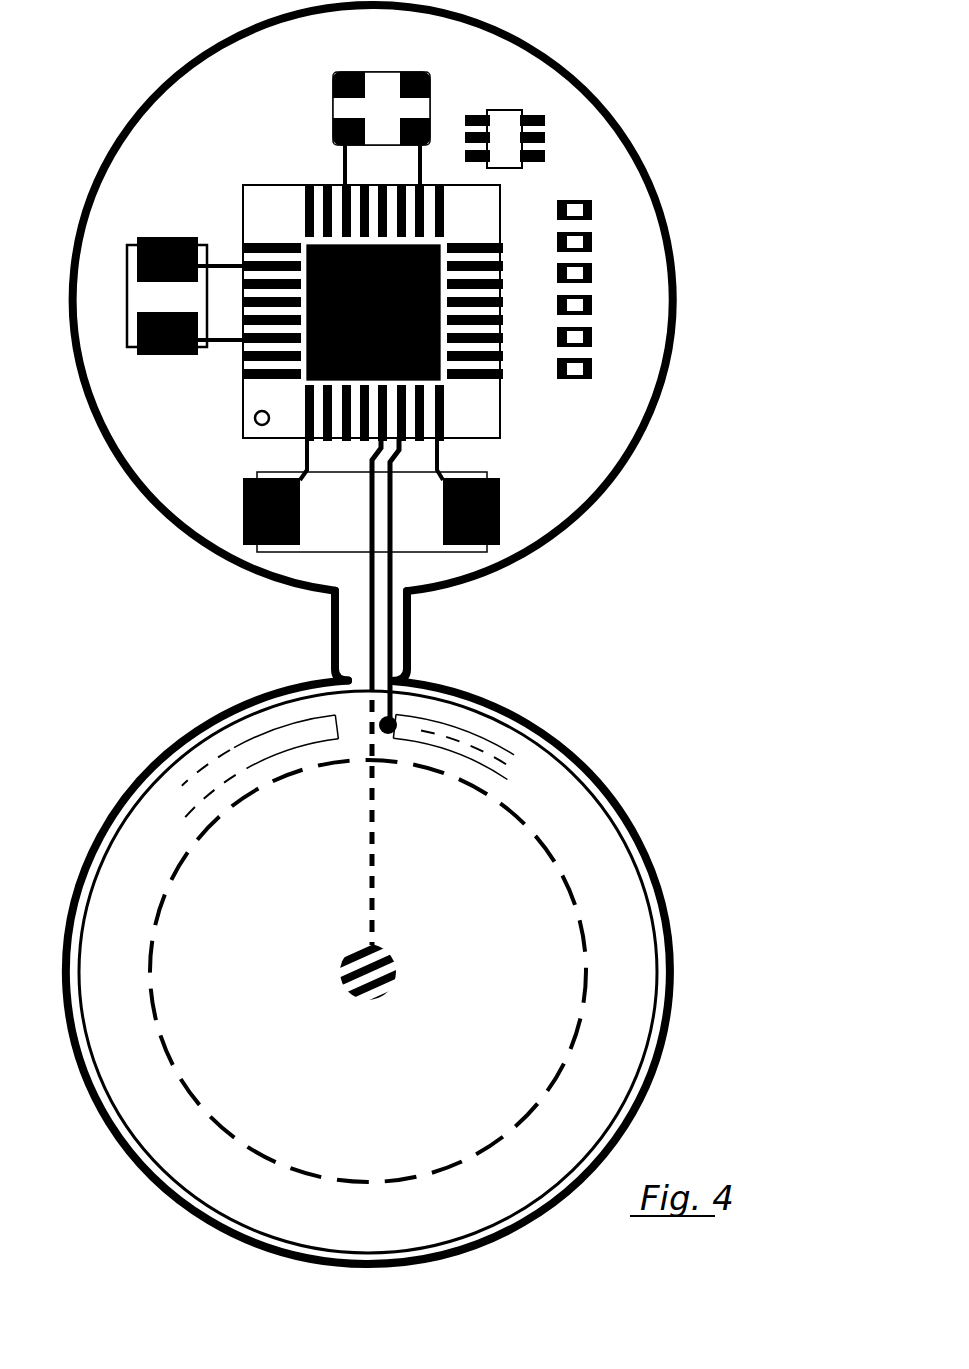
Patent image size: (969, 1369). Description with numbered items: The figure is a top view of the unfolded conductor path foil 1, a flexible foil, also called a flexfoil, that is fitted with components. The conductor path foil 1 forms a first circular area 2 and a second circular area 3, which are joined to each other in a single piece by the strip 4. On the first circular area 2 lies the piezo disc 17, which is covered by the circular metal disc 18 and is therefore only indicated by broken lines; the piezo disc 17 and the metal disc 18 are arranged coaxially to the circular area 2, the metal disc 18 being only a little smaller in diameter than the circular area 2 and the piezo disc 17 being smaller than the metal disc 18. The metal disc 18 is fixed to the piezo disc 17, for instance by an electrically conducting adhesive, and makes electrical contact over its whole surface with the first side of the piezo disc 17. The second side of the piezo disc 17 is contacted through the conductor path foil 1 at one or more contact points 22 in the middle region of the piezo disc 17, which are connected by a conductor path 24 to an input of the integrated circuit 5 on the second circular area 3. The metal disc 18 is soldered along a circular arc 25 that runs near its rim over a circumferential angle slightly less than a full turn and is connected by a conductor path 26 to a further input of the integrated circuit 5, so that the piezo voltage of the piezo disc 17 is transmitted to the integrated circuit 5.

The conductor path foil 1 is at (637, 85).
The first circular area 2 is at (662, 877).
The second circular area 3 is at (653, 258).
The strip 4 is at (345, 640).
The integrated circuit 5 is at (293, 238).
The piezo disc 17 is at (588, 963).
The metal disc 18 is at (614, 822).
The contact points 22 is at (412, 963).
The conductor path 24 is at (368, 600).
The circular arc 25 is at (277, 740).
The conductor path 26 is at (392, 570).